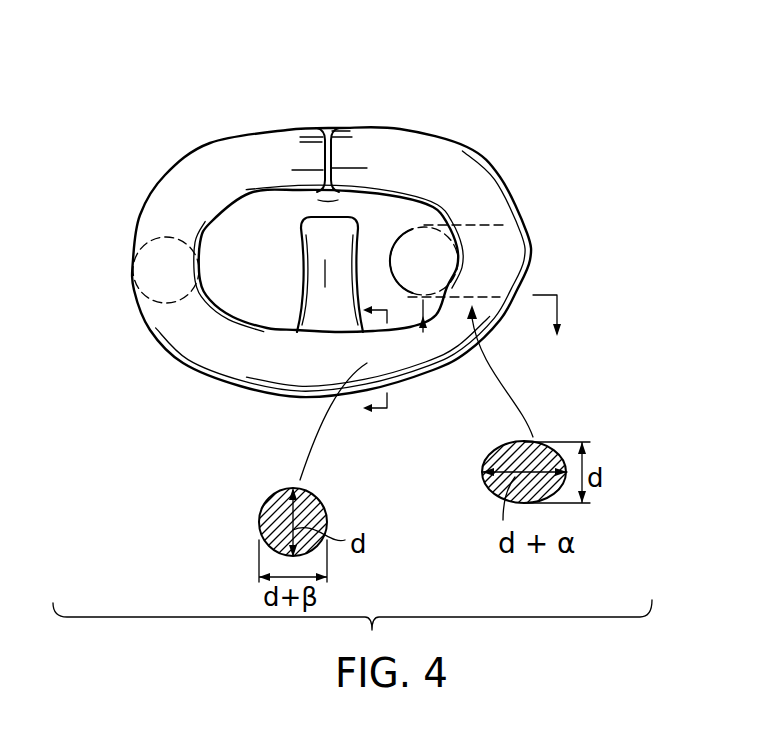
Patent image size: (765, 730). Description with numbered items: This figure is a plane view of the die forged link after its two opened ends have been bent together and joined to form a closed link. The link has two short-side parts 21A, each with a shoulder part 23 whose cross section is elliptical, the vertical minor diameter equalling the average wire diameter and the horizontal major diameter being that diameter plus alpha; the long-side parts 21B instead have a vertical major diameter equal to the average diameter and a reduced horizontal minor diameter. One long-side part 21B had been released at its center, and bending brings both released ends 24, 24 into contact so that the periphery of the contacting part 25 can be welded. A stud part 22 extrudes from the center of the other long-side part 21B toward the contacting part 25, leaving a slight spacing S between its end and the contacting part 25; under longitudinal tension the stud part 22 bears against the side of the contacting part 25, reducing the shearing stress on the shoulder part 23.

The short-side part 21A is at (123, 142).
The long-side part 21B is at (467, 408).
The stud part 22 is at (300, 266).
The shoulder part 23 is at (502, 224).
The released end 24 is at (307, 128).
The contacting part 25 is at (332, 116).
The spacing S is at (332, 198).